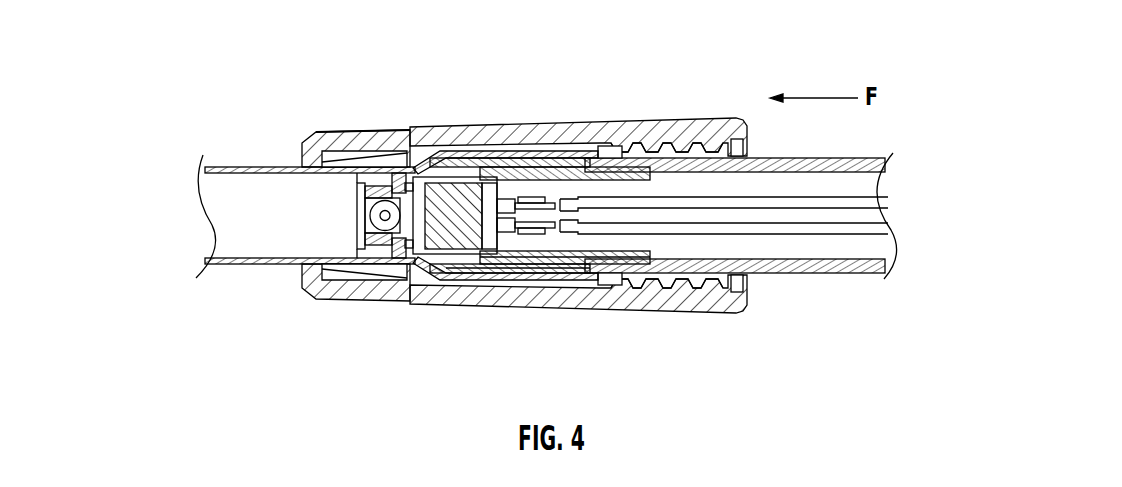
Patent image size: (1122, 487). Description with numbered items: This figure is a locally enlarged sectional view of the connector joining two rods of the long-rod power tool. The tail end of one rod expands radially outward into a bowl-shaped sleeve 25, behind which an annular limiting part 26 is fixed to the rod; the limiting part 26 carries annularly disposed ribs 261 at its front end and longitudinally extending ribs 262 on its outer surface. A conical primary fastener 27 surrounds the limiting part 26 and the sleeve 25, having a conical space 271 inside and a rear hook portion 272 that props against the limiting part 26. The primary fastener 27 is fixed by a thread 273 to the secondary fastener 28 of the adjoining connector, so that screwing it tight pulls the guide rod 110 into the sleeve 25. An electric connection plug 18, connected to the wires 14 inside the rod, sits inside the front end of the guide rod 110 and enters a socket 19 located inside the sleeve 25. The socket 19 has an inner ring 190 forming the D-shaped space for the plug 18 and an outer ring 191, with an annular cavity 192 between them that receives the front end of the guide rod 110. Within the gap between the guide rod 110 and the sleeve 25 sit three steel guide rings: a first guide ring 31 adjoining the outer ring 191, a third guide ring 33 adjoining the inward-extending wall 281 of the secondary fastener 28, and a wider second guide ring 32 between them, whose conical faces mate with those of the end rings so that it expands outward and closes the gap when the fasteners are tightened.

The wires 14 is at (832, 224).
The electric connection plug 18 is at (449, 242).
The socket 19 is at (408, 256).
The sleeve 25 is at (437, 128).
The limiting part 26 is at (342, 131).
The primary fastener 27 is at (342, 300).
The secondary fastener 28 is at (645, 275).
The first guide ring 31 is at (500, 270).
The second guide ring 32 is at (527, 270).
The third guide ring 33 is at (548, 272).
The guide rod 110 is at (486, 250).
The inner ring 190 is at (452, 165).
The outer ring 191 is at (473, 150).
The annular cavity 192 is at (462, 175).
The ribs 261 is at (408, 133).
The ribs 262 is at (347, 162).
The conical space 271 is at (655, 118).
The hook portion 272 is at (315, 289).
The thread 273 is at (678, 294).
The wall 281 is at (590, 146).